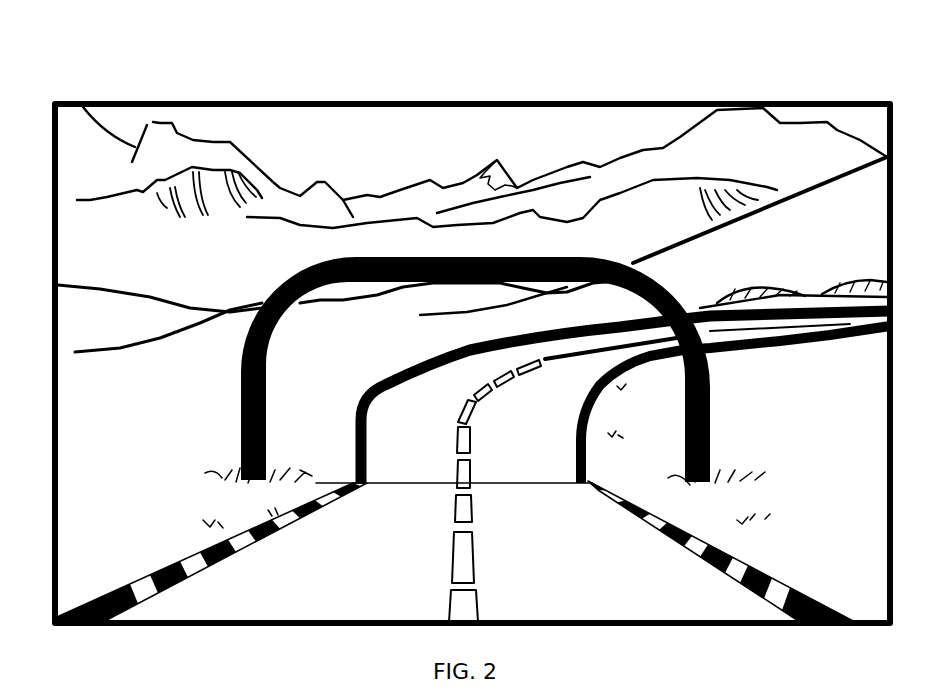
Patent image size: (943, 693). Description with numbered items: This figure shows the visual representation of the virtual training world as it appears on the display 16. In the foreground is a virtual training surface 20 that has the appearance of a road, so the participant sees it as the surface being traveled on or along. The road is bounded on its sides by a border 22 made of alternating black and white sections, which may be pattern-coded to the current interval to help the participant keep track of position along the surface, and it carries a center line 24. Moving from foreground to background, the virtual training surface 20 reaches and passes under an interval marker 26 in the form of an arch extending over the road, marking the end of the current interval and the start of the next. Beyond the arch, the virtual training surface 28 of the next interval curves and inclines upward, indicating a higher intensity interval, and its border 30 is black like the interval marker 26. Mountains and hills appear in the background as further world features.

The display 16 is at (43, 163).
The virtual training surface 20 is at (305, 565).
The border 22 is at (135, 595).
The center line 24 is at (463, 567).
The interval marker 26 is at (524, 256).
The virtual training surface of the next interval 28 is at (533, 437).
The border 30 is at (583, 460).